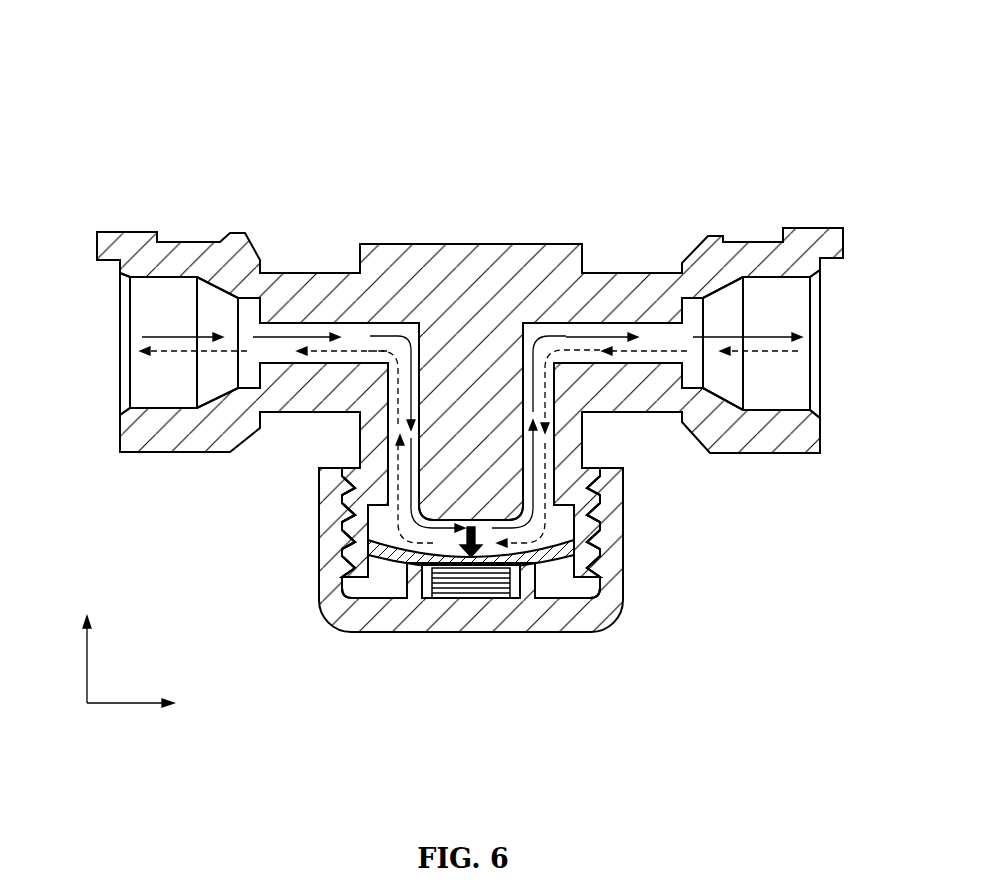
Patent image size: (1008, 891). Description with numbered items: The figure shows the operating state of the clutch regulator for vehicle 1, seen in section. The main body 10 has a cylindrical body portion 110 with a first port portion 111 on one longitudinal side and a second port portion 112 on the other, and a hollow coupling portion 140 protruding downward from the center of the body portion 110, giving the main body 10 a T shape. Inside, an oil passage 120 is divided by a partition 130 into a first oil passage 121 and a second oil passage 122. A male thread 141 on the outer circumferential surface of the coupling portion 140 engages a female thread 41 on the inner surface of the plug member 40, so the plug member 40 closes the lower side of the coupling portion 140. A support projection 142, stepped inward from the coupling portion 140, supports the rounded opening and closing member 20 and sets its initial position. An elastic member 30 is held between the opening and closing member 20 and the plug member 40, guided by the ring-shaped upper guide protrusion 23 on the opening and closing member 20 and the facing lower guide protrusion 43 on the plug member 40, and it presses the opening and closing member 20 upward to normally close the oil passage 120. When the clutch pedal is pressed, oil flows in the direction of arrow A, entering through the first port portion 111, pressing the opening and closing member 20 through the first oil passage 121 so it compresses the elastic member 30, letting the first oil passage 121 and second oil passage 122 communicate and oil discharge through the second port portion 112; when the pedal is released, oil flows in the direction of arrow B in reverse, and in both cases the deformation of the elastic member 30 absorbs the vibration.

The clutch regulator for vehicle 1 is at (347, 63).
The main body 10 is at (585, 241).
The body portion 110 is at (305, 285).
The first port portion 111 is at (130, 432).
The second port portion 112 is at (789, 450).
The oil passage 120 is at (466, 302).
The first oil passage 121 is at (373, 328).
The second oil passage 122 is at (557, 328).
The partition 130 is at (515, 445).
The coupling portion 140 is at (346, 480).
The male thread 141 is at (360, 543).
The support projection 142 is at (358, 518).
The opening and closing member 20 is at (558, 571).
The upper guide protrusion 23 is at (380, 597).
The elastic member 30 is at (423, 573).
The plug member 40 is at (506, 622).
The female thread 41 is at (598, 518).
The lower guide protrusion 43 is at (537, 580).
The arrow A is at (165, 336).
The arrow B is at (773, 351).